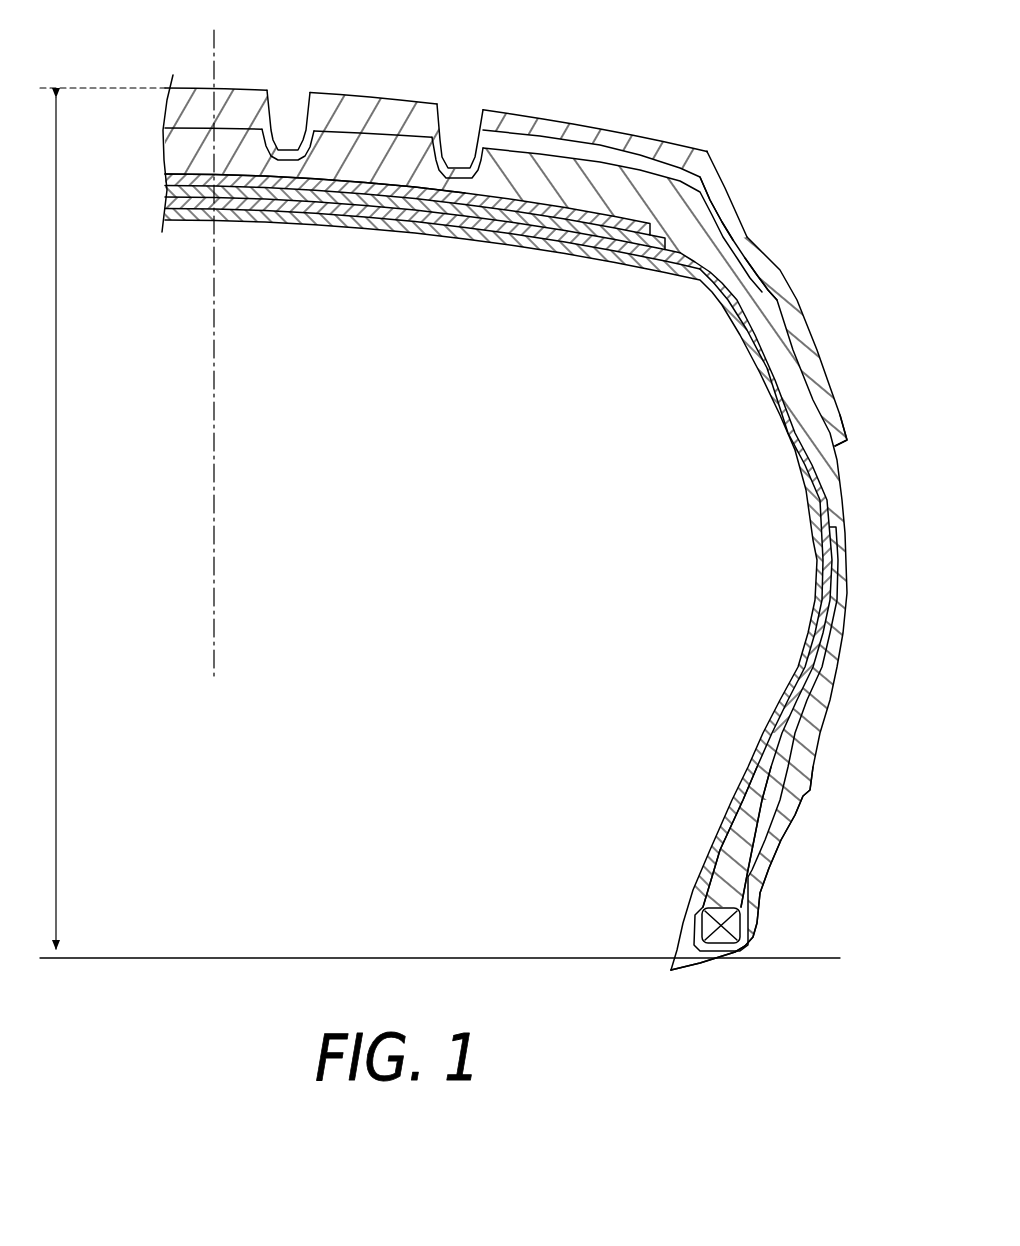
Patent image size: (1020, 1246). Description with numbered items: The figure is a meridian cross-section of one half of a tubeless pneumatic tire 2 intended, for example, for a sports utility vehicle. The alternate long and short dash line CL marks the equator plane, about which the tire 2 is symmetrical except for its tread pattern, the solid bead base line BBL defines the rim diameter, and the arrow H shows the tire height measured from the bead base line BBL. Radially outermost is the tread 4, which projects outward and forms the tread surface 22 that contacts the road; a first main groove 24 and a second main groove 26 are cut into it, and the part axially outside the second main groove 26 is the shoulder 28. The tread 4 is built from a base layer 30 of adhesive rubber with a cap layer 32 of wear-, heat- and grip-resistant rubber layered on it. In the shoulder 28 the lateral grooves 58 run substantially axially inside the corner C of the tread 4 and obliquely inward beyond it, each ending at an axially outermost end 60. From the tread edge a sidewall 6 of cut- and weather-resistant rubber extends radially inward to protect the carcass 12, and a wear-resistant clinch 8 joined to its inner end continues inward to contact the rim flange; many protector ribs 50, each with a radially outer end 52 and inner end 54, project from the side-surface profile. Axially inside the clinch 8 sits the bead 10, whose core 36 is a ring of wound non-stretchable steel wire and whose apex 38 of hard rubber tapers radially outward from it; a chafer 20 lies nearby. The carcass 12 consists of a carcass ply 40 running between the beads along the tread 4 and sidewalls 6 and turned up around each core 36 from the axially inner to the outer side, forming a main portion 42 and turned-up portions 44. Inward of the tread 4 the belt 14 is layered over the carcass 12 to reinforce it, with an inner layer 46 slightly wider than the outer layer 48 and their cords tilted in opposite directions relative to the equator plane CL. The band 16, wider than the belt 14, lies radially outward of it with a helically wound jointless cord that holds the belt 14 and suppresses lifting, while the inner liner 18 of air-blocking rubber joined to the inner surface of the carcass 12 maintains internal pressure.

The pneumatic tire 2 is at (808, 85).
The tread 4 is at (411, 74).
The sidewall 6 is at (846, 518).
The clinch 8 is at (786, 810).
The bead 10 is at (673, 879).
The carcass 12 is at (716, 312).
The belt 14 is at (315, 209).
The band 16 is at (450, 228).
The inner liner 18 is at (530, 256).
The chafer 20 is at (705, 967).
The tread surface 22 is at (345, 93).
The first main groove 24 is at (288, 108).
The second main groove 26 is at (451, 104).
The shoulder 28 is at (544, 102).
The base layer 30 is at (553, 178).
The cap layer 32 is at (598, 154).
The core 36 is at (700, 920).
The apex 38 is at (704, 885).
The carcass ply 40 is at (501, 590).
The main portion 42 is at (812, 483).
The turned-up portion 44 is at (814, 574).
The inner layer 46 is at (290, 222).
The outer layer 48 is at (343, 222).
The protector rib 50 is at (822, 353).
The outer end 52 is at (793, 266).
The inner end 54 is at (849, 447).
The lateral groove 58 is at (632, 158).
The end of lateral groove 60 is at (754, 195).
The corner of tread C is at (710, 150).
The height of tire H is at (98, 518).
The equator plane CL is at (266, 355).
The bead base line BBL is at (378, 956).